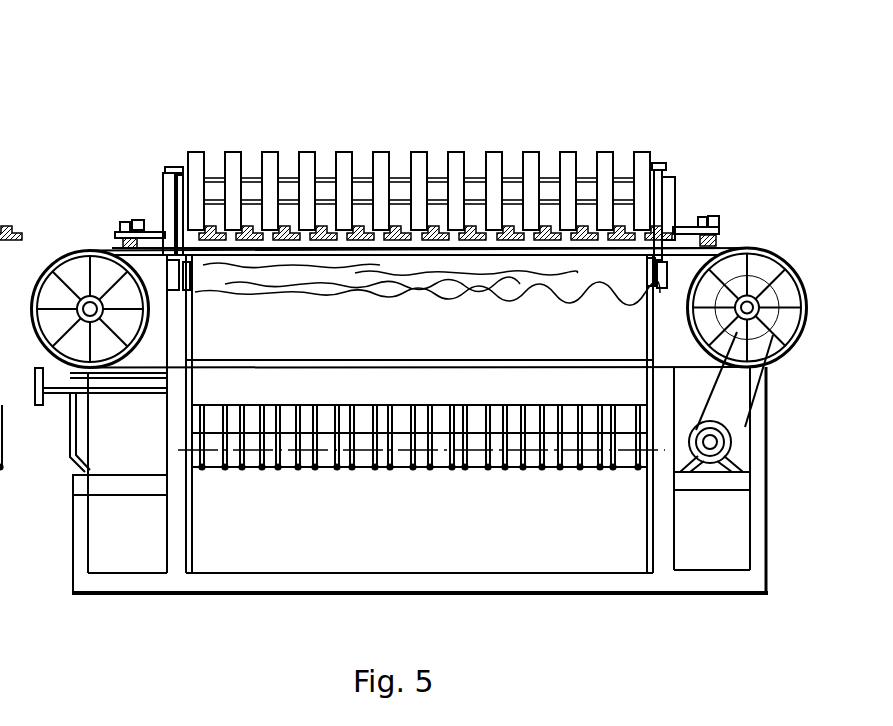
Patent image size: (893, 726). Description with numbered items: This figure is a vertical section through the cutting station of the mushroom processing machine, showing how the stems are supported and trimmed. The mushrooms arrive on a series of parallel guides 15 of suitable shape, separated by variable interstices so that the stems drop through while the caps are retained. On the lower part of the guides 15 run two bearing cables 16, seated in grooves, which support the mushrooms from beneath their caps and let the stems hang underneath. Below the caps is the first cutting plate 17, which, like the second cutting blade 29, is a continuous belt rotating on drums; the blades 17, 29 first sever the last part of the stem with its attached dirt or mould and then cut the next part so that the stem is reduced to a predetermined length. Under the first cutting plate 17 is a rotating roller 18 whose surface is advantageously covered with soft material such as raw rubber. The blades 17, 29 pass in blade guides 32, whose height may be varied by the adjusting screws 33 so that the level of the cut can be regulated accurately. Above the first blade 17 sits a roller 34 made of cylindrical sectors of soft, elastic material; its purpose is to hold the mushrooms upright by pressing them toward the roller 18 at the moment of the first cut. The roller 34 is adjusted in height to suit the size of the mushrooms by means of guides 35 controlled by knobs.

The parallel guides 15 is at (362, 227).
The bearing cables 16 is at (260, 230).
The first cutting plate 17 is at (677, 228).
The rotating roller 18 is at (512, 267).
The second cutting blade 29 is at (705, 242).
The blade guides 32 is at (123, 247).
The left support bracket 33 is at (140, 220).
The roller with cylindrical sectors 34 is at (457, 165).
The guides 35 is at (177, 203).